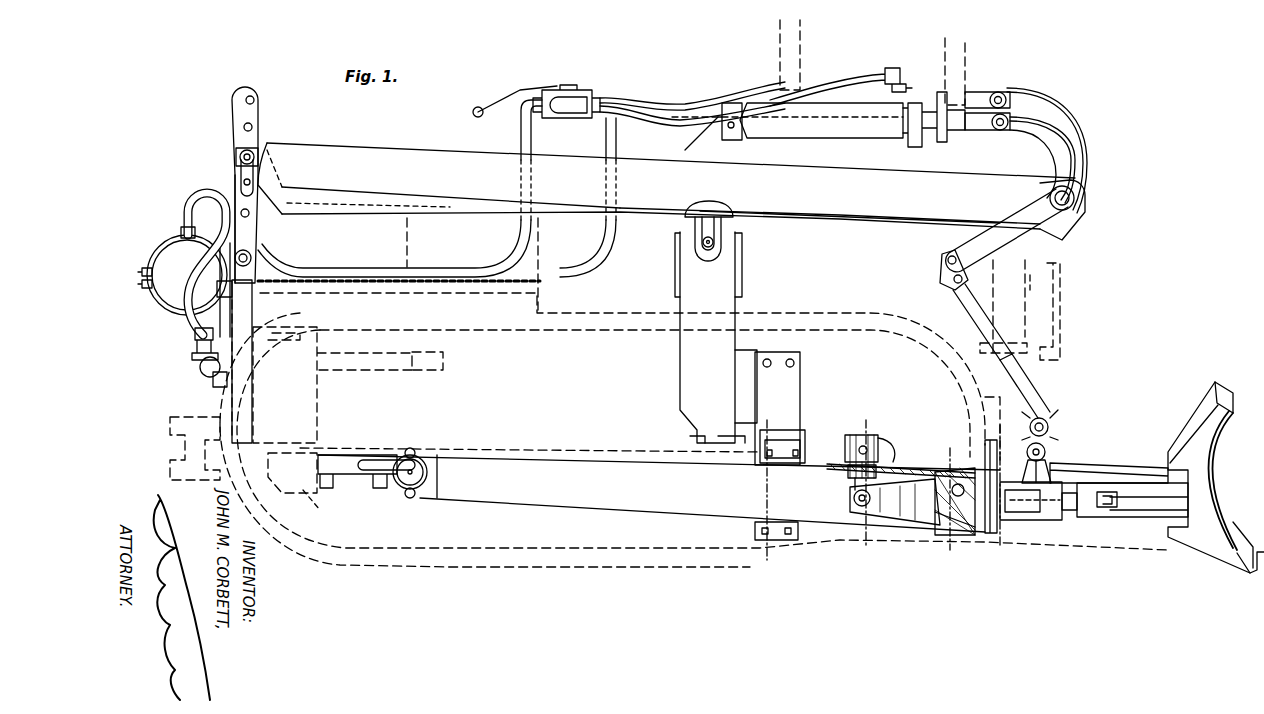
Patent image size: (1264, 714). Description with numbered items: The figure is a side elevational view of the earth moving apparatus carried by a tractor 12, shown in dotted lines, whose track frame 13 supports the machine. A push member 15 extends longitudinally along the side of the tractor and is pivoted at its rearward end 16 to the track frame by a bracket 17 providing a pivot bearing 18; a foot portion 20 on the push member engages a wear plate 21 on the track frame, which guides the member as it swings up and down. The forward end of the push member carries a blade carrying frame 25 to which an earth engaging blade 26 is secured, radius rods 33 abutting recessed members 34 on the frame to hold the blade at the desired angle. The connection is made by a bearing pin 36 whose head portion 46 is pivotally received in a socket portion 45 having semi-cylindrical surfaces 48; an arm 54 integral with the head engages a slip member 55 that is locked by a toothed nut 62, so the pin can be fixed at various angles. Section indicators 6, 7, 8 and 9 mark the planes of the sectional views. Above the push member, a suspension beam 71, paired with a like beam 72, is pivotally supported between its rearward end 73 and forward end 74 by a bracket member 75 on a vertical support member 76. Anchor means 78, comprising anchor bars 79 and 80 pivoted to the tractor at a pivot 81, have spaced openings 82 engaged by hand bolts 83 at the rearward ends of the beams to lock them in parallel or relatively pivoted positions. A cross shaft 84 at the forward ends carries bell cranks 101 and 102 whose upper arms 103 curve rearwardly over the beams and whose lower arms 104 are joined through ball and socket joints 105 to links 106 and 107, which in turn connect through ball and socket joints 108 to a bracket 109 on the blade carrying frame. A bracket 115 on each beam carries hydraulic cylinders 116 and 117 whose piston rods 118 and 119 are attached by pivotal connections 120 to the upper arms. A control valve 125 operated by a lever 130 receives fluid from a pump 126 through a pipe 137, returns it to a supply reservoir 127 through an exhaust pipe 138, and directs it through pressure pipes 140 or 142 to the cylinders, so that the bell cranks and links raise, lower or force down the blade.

The section line 6- 6 is at (784, 424).
The section line 7- 7 is at (880, 424).
The section line 8- 8 is at (968, 465).
The section line 9- 9 is at (1014, 435).
The tractor 12 is at (1065, 270).
The track frame 13 is at (322, 508).
The push member 15 is at (578, 497).
The rearward ends 16 is at (426, 455).
The brackets 17 is at (364, 455).
The pivot bearings 18 is at (410, 493).
The foot portions 20 is at (790, 438).
The wear plates 21 is at (785, 390).
The blade carrying frame 25 is at (1110, 465).
The earth engaging blade 26 is at (1226, 390).
The radius rods 33 is at (1140, 510).
The recessed members 34 is at (1100, 508).
The bearing pin 36 is at (1030, 525).
The socket portion 45 is at (950, 472).
The head portion 46 is at (940, 528).
The semi-cylindrical surfaces 48 is at (991, 533).
The arm 54 is at (895, 520).
The slip member 55 is at (858, 506).
The nut 62 is at (855, 440).
The suspension beam 71 is at (880, 210).
The suspension beam 72 is at (905, 195).
The rearward ends 73 is at (290, 150).
The forward ends 74 is at (1040, 192).
The bracket members 75 is at (700, 248).
The vertical support members 76 is at (690, 345).
The anchor means 78 is at (228, 153).
The anchor bar 79 is at (256, 108).
The anchor bar 80 is at (240, 95).
The pivot 81 is at (250, 257).
The spaced openings 82 is at (244, 127).
The hand bolts 83 is at (240, 178).
The cross shaft 84 is at (1072, 205).
The bell crank 101 is at (1055, 148).
The bell crank 102 is at (1045, 96).
The upper arms 103 is at (1055, 118).
The lower arms 104 is at (958, 240).
The ball and socket joints 105 is at (942, 270).
The link 106 is at (972, 325).
The link 107 is at (1022, 392).
The ball and socket joints 108 is at (1062, 430).
The bracket 109 is at (1046, 452).
The bracket 115 is at (705, 135).
The hydraulic cylinder 116 is at (815, 110).
The hydraulic cylinder 117 is at (850, 78).
The piston rod 118 is at (952, 125).
The piston rod 119 is at (972, 94).
The pivotal connections 120 is at (1006, 112).
The control valve 125 is at (548, 82).
The fluid pump 126 is at (200, 378).
The fluid supply reservoir 127 is at (178, 245).
The lever 130 is at (500, 100).
The pipe 137 is at (519, 135).
The exhaust pipe 138 is at (605, 140).
The pressure pipes 140 is at (763, 96).
The pressure pipes 142 is at (636, 110).